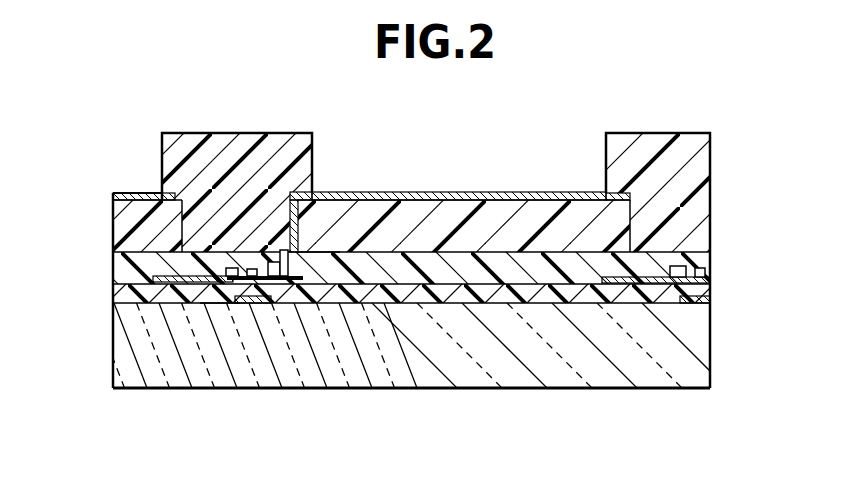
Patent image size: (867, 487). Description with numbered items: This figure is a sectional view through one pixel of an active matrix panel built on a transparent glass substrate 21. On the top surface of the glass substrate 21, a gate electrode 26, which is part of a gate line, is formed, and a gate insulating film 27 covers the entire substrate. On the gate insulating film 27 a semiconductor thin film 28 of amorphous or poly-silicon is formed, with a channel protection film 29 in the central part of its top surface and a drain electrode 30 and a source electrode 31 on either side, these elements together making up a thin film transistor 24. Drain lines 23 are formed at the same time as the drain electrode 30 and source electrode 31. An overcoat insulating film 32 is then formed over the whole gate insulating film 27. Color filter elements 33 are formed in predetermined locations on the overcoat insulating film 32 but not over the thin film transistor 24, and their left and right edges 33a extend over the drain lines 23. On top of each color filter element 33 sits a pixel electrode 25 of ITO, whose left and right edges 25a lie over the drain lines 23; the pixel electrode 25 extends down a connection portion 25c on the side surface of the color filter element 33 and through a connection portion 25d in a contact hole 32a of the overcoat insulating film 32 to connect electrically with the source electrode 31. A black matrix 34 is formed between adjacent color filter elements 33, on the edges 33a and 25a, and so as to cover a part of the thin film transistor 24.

The transparent glass substrate 21 is at (554, 388).
The drain line 23 is at (163, 303).
The thin film transistor 24 is at (222, 315).
The pixel electrode 25 is at (455, 193).
The left and right edges of the pixel electrode 25a is at (602, 195).
The connection portion 25c is at (300, 228).
The connection portion 25d is at (266, 252).
The gate electrode 26 is at (241, 303).
The gate insulating film 27 is at (411, 292).
The semiconductor thin film 28 is at (276, 276).
The channel protection film 29 is at (248, 270).
The drain electrode 30 is at (228, 268).
The source electrode 31 is at (295, 303).
The overcoat insulating film 32 is at (483, 268).
The contact hole 32a is at (314, 270).
The color filter element 33 is at (541, 200).
The left and right edges of the color filter element 33a is at (648, 223).
The black matrix 34 is at (268, 148).